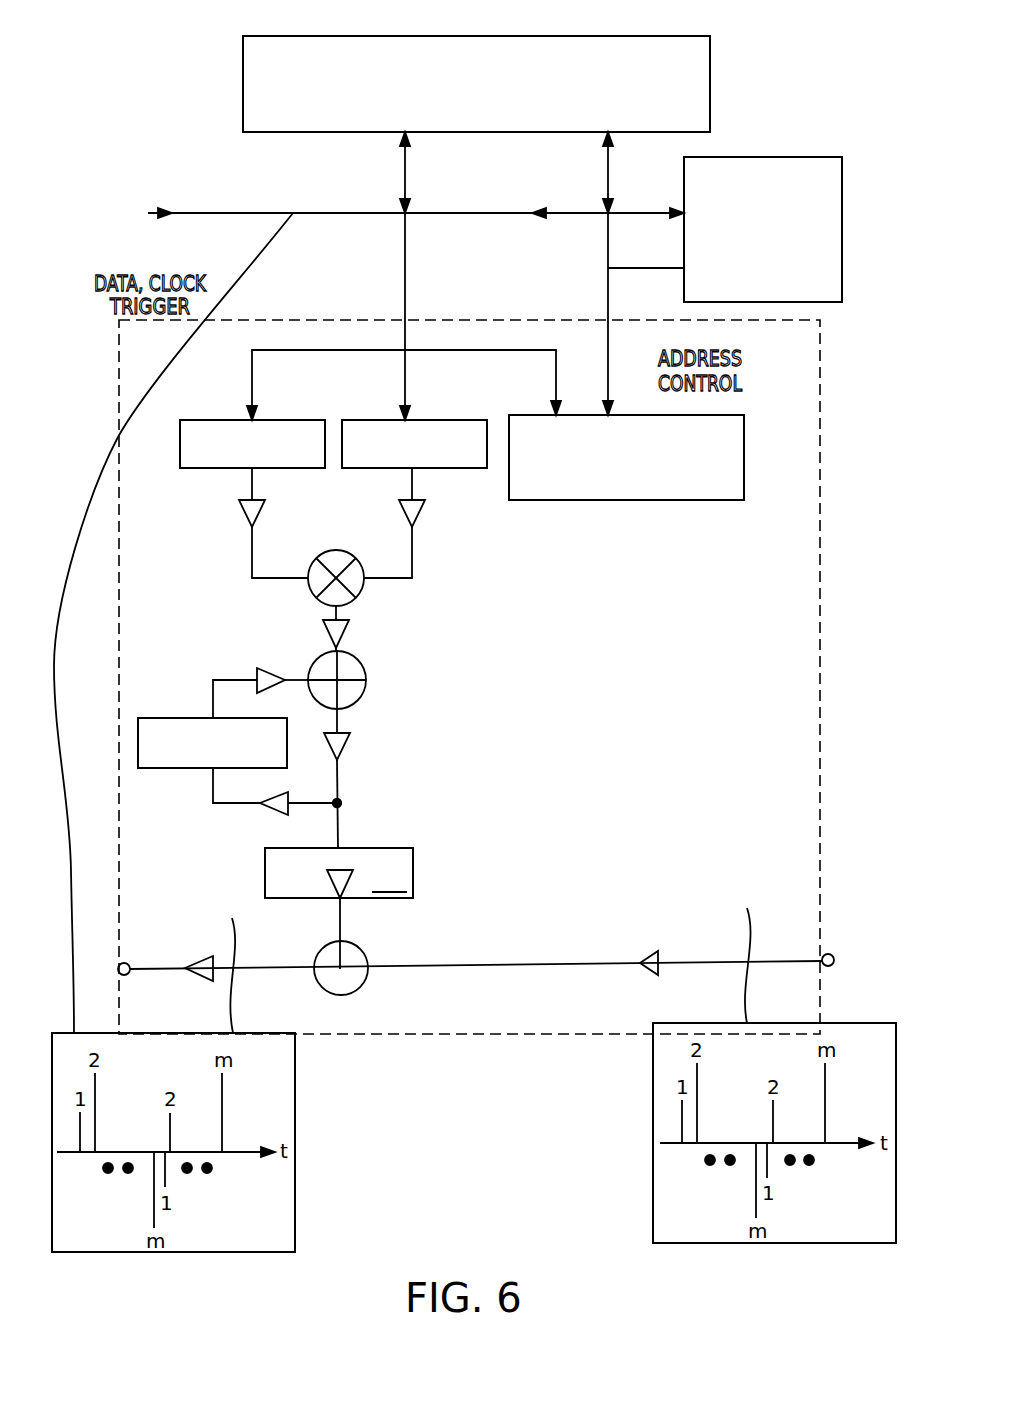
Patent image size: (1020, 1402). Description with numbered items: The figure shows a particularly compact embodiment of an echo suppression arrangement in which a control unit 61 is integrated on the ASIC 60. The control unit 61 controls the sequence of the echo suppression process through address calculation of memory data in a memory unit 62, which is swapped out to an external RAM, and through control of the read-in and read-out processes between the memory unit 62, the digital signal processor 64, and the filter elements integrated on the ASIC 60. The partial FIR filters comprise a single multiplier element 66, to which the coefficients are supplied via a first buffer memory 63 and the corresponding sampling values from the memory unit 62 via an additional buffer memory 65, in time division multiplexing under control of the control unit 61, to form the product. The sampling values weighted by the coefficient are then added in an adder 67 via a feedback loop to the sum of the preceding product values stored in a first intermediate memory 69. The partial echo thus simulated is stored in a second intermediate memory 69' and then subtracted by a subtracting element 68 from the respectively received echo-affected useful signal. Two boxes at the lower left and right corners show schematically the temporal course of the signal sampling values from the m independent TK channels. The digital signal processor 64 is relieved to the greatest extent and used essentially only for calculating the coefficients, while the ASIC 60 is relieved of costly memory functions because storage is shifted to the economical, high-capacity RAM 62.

The ASIC 60 is at (820, 585).
The control unit 61 is at (632, 500).
The memory unit 62 is at (710, 83).
The first buffer memory 63 is at (220, 468).
The digital signal processor 64 is at (842, 197).
The additional buffer memory 65 is at (438, 468).
The multiplier element 66 is at (358, 600).
The adder 67 is at (362, 697).
The subtracting element 68 is at (355, 946).
The first intermediate memory 69 is at (233, 742).
The second intermediate memory 69' is at (333, 895).